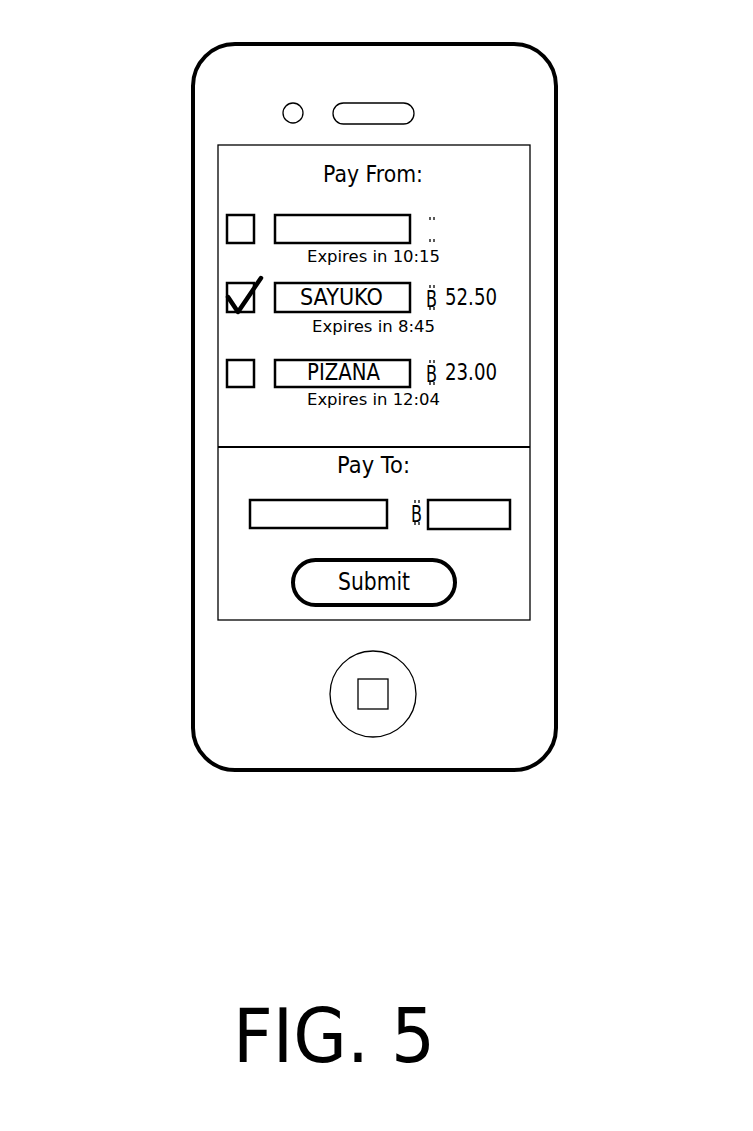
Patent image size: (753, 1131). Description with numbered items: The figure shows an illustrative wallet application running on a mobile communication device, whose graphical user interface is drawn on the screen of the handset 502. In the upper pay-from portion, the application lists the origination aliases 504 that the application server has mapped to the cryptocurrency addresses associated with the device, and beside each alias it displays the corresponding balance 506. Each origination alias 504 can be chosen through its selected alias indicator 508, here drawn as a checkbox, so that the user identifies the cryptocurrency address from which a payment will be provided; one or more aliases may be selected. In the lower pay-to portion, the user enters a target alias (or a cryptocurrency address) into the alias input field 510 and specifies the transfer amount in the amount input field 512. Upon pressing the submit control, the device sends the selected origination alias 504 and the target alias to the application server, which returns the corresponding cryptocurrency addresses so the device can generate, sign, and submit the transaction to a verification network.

The mobile device 502 is at (557, 87).
The origination alias 504 is at (300, 215).
The balance 506 is at (472, 218).
The selected alias indicator 508 is at (232, 283).
The alias input field 510 is at (275, 500).
The amount input field 512 is at (468, 500).